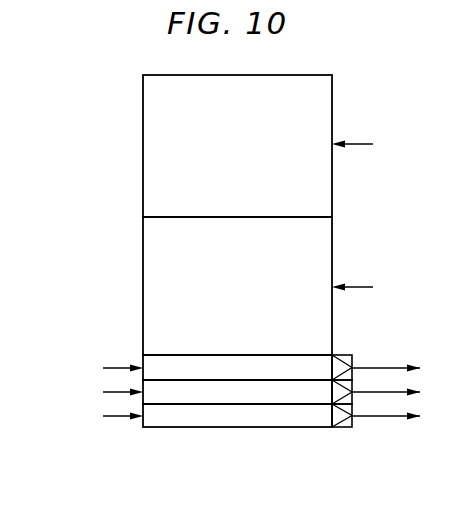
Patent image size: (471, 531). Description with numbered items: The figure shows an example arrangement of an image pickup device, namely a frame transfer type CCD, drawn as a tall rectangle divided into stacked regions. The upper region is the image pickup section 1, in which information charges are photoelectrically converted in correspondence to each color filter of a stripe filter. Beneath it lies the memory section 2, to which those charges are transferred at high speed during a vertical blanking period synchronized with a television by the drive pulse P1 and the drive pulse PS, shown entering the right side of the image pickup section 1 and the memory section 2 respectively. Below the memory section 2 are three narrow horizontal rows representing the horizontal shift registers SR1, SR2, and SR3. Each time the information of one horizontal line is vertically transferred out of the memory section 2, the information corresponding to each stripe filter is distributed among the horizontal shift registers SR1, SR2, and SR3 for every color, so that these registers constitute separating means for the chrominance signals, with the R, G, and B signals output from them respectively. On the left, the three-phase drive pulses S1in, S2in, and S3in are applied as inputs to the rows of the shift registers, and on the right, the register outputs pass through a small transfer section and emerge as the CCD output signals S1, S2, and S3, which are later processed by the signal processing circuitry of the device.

The image pickup section 1 is at (329, 105).
The memory section 2 is at (327, 248).
The horizontal shift register SR1 is at (247, 368).
The horizontal shift register SR2 is at (247, 392).
The horizontal shift register SR3 is at (247, 416).
The drive pulse φ P1 is at (375, 145).
The drive pulse φ PS is at (375, 288).
The drive pulse φS1 S1in is at (99, 368).
The drive pulse φS2 S2in is at (99, 392).
The drive pulse φS3 S3in is at (99, 416).
The output signal S1 is at (401, 368).
The output signal S2 is at (401, 392).
The output signal S3 is at (401, 416).